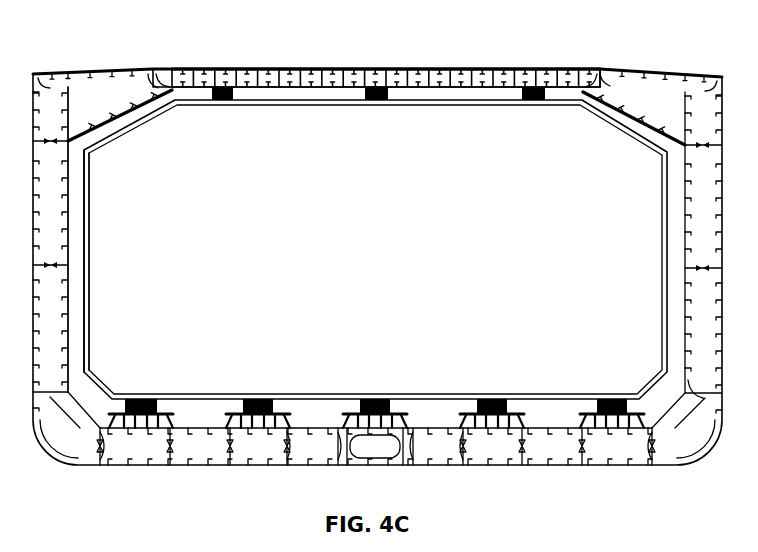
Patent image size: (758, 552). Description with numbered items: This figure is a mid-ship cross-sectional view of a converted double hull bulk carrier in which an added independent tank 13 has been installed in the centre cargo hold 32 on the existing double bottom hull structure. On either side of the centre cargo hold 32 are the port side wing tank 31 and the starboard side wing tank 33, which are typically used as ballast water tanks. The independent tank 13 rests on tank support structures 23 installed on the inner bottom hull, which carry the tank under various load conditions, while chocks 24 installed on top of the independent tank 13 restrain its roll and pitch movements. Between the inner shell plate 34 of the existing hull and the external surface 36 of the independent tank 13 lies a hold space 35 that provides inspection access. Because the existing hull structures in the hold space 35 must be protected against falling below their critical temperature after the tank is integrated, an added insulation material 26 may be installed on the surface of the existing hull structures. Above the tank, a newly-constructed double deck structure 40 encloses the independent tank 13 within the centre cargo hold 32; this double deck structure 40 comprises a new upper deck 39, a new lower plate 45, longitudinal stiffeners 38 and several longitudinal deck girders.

The independent tank 13 is at (254, 95).
The tank support structure 23 is at (407, 421).
The chock 24 is at (544, 100).
The added insulation material 26 is at (532, 429).
The port side wing tank 31 is at (66, 257).
The centre cargo hold 32 is at (378, 236).
The starboard side wing tank 33 is at (687, 260).
The inner shell plate 34 is at (68, 307).
The hold space 35 is at (77, 223).
The external surface of the independent tank 36 is at (88, 258).
The longitudinal stiffeners 38 is at (460, 82).
The new upper deck 39 is at (410, 72).
The double deck structure 40 is at (305, 73).
The new lower plate 45 is at (286, 89).